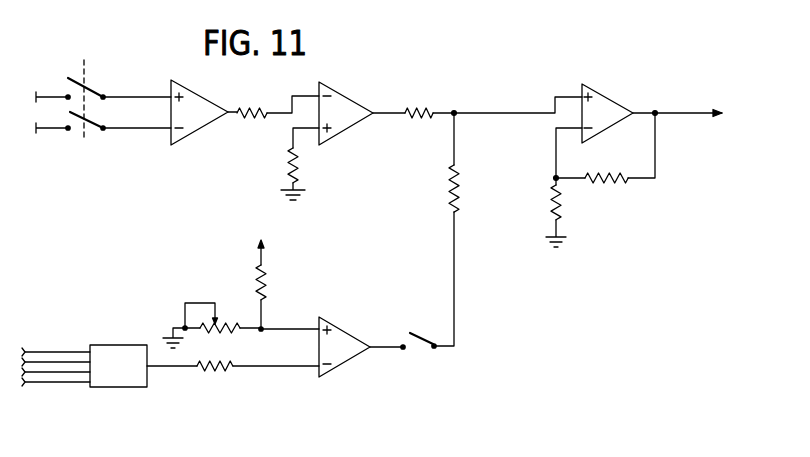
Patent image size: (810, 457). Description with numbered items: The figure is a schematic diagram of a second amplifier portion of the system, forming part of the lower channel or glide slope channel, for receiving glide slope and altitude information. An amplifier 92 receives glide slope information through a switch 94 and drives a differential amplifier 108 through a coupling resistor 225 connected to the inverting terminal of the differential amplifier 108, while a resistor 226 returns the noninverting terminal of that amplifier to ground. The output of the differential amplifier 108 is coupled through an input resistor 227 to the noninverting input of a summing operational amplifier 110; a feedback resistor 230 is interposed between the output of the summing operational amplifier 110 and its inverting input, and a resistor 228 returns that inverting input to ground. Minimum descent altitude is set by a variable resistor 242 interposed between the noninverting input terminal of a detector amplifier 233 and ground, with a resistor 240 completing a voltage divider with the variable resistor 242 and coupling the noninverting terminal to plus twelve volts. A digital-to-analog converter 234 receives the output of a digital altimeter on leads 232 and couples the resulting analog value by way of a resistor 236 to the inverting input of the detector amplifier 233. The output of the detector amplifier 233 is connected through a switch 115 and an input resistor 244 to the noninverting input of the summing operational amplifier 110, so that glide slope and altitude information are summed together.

The switch 94 is at (105, 72).
The amplifier 92 is at (208, 80).
The coupling resistor 225 is at (255, 106).
The resistor 226 is at (288, 153).
The differential amplifier 108 is at (345, 133).
The input resistor 227 is at (415, 107).
The summing operational amplifier 110 is at (617, 80).
The feedback resistor 230 is at (615, 186).
The resistor 228 is at (562, 195).
The input resistor 244 is at (459, 190).
The leads 232 is at (53, 349).
The digital-to-analog converter 234 is at (153, 403).
The variable resistor 242 is at (228, 320).
The resistor 240 is at (267, 290).
The resistor 236 is at (225, 373).
The detector amplifier 233 is at (357, 335).
The switch 115 is at (417, 352).